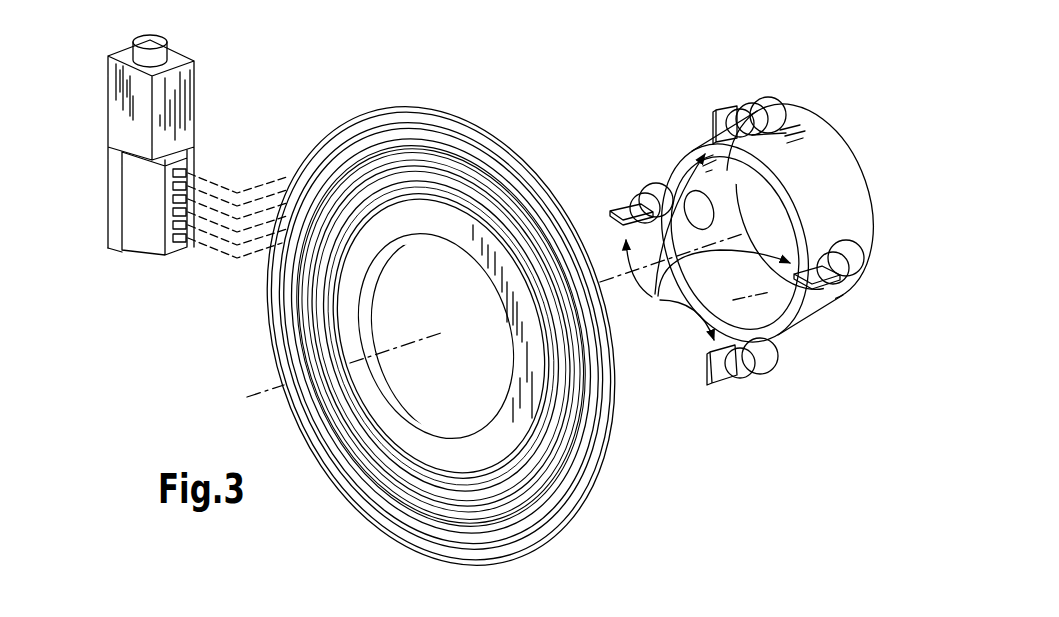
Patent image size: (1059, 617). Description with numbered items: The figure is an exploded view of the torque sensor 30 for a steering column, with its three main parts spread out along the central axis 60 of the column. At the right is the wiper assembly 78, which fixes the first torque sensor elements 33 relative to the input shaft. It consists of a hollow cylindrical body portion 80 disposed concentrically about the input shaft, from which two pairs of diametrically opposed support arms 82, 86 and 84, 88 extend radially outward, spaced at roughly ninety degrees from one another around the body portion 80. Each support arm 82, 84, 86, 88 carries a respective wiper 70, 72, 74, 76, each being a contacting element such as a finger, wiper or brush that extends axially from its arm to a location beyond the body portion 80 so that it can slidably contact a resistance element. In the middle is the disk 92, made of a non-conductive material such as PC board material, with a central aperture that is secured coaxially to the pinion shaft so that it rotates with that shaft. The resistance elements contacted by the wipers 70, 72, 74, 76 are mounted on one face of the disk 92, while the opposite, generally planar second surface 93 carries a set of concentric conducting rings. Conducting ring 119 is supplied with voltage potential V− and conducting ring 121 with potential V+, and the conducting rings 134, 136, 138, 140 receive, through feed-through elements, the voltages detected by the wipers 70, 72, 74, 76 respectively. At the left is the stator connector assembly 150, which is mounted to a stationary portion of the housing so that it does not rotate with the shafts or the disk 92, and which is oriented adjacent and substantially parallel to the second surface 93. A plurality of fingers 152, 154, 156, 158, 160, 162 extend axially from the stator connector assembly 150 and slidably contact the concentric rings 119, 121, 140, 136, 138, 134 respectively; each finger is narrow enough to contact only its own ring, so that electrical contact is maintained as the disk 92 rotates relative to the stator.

The torque sensor 30 is at (548, 82).
The first torque sensor elements 33 is at (708, 247).
The central axis 60 is at (282, 388).
The wiper 70 is at (718, 115).
The wiper 72 is at (817, 307).
The wiper 74 is at (717, 367).
The wiper 76 is at (636, 205).
The wiper assembly 78 is at (870, 180).
The cylindrical body portion 80 is at (813, 168).
The support arm 82 is at (770, 100).
The support arm 84 is at (832, 266).
The support arm 86 is at (763, 360).
The support arm 88 is at (663, 187).
The disk 92 is at (580, 530).
The second surface 93 is at (462, 562).
The conducting ring 119 is at (412, 122).
The conducting ring 121 is at (447, 557).
The conducting ring 134 is at (433, 473).
The conducting ring 136 is at (447, 508).
The conducting ring 138 is at (440, 492).
The conducting ring 140 is at (457, 540).
The stator connector assembly 150 is at (105, 82).
The finger 152 is at (173, 172).
The finger 154 is at (173, 185).
The finger 156 is at (173, 199).
The finger 158 is at (173, 212).
The finger 160 is at (173, 226).
The finger 162 is at (173, 250).